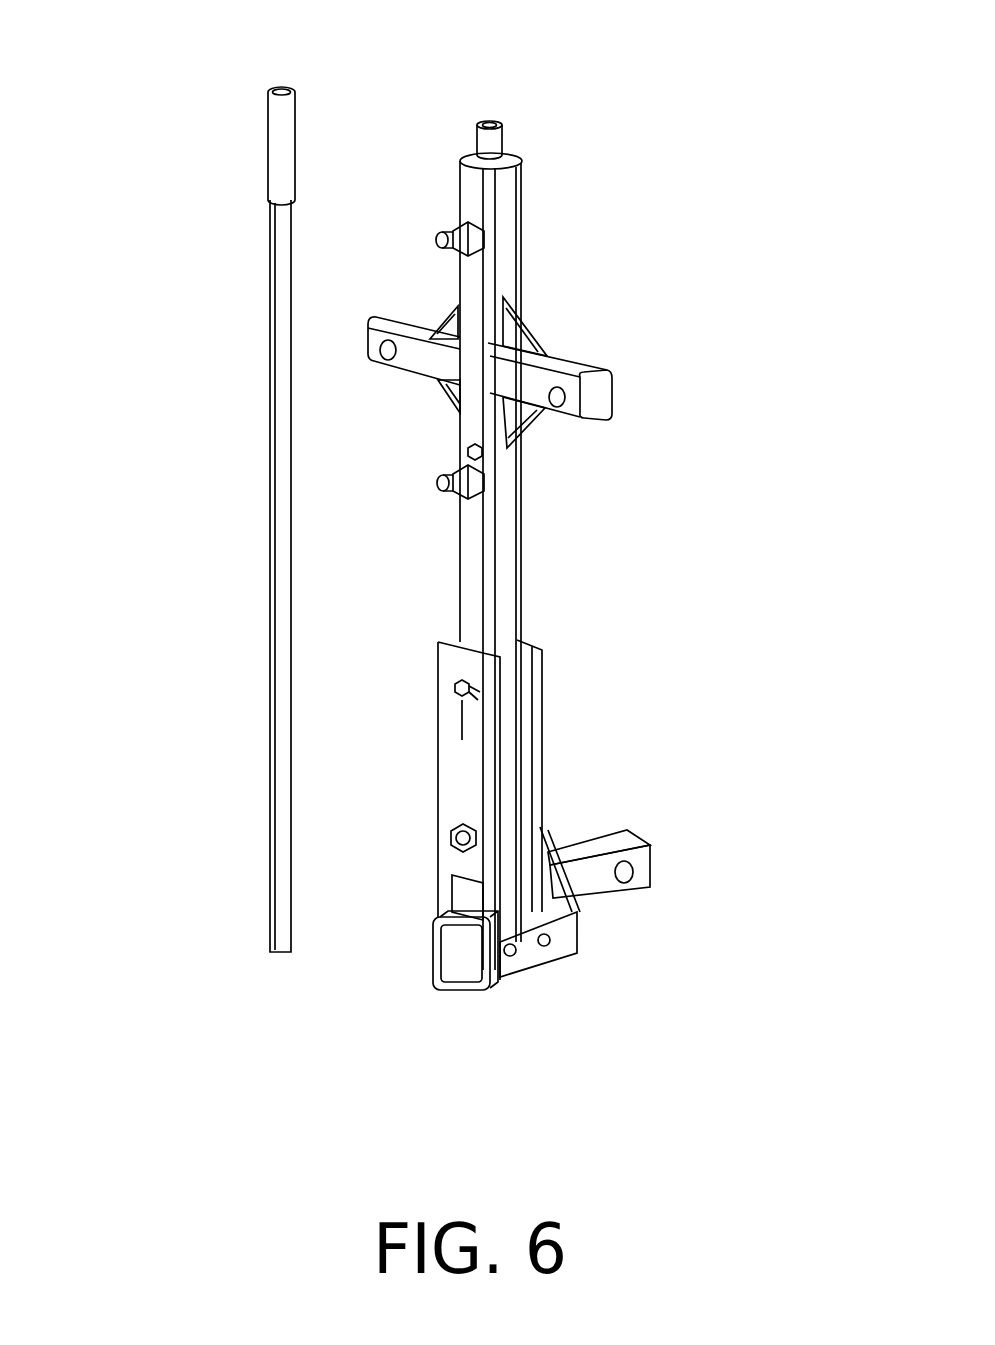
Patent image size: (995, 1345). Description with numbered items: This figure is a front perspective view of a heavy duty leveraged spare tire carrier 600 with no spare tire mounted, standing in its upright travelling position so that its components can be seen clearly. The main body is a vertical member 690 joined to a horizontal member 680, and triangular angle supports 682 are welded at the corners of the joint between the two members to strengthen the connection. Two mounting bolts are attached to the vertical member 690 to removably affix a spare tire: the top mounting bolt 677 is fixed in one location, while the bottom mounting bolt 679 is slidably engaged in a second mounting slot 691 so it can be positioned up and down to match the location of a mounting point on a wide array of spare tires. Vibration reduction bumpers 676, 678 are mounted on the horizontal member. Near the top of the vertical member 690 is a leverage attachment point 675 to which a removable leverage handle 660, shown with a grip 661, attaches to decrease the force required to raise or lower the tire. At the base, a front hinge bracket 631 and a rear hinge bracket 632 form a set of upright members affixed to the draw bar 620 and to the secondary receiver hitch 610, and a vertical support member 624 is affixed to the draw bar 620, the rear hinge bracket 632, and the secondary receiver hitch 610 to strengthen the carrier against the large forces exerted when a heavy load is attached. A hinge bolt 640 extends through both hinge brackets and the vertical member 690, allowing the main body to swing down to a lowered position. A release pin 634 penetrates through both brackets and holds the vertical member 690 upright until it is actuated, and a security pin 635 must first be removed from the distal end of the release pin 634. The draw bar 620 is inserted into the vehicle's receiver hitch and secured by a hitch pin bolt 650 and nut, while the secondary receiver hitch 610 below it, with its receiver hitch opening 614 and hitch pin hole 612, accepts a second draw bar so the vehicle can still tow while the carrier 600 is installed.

The heavy duty leveraged spare tire carrier 600 is at (267, 1170).
The secondary receiver hitch 610 is at (553, 947).
The hitch pin hole 612 is at (512, 952).
The receiver hitch opening 614 is at (396, 952).
The draw bar 620 is at (627, 837).
The vertical support member 624 is at (548, 898).
The front hinge bracket 631 is at (447, 785).
The rear hinge bracket 632 is at (540, 803).
The release pin 634 is at (459, 700).
The security pin 635 is at (455, 687).
The hinge bolt 640 is at (457, 850).
The hitch pin bolt 650 is at (625, 873).
The leverage handle 660 is at (277, 335).
The grip 661 is at (265, 165).
The leverage attachment point 675 is at (492, 121).
The vibration reduction bumper 676 is at (388, 350).
The top mounting bolt 677 is at (445, 232).
The vibration reduction bumper 678 is at (585, 387).
The bottom mounting bolt 679 is at (442, 487).
The horizontal member 680 is at (562, 363).
The angle supports 682 is at (447, 322).
The vertical member 690 is at (507, 187).
The second mounting slot 691 is at (480, 452).